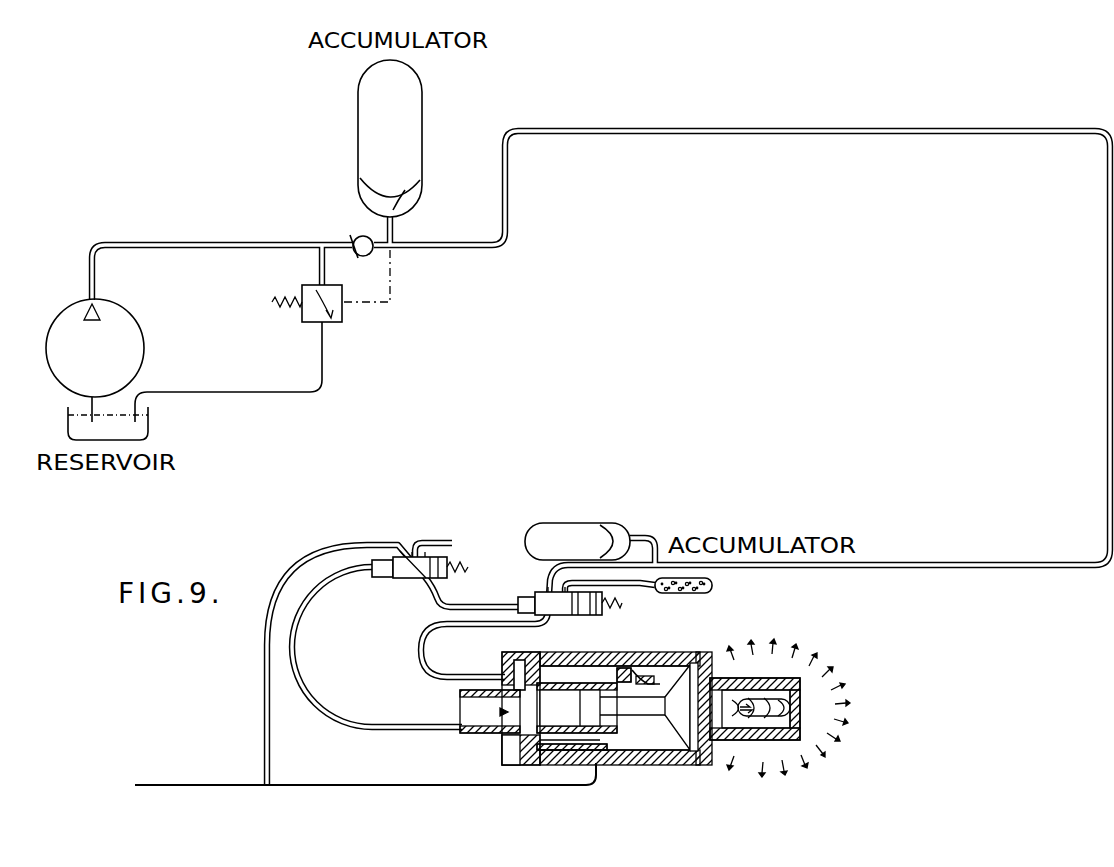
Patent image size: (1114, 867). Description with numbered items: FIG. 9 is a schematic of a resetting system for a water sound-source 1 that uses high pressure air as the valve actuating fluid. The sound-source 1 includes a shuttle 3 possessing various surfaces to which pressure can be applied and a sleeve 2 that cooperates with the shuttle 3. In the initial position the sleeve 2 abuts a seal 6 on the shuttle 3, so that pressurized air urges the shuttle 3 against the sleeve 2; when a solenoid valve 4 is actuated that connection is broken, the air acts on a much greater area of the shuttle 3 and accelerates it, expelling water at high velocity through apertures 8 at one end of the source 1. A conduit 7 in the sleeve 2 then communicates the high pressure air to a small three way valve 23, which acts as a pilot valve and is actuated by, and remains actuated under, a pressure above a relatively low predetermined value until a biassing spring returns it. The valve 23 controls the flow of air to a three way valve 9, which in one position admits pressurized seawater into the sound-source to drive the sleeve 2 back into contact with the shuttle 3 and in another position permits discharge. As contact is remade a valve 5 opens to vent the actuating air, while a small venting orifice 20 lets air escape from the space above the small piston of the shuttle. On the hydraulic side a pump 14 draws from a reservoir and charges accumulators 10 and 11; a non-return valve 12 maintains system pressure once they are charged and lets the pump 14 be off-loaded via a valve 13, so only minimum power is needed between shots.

The water sound-source 1 is at (681, 659).
The sleeve 2 is at (546, 665).
The shuttle 3 is at (703, 748).
The solenoid valve 4 is at (502, 712).
The valve 5 is at (629, 667).
The seal 6 is at (651, 682).
The conduit 7 is at (600, 755).
The apertures 8 is at (800, 688).
The three way valve 9 is at (540, 600).
The accumulator 10 is at (618, 527).
The accumulator 11 is at (420, 172).
The non-return valve 12 is at (353, 239).
The valve 13 is at (342, 321).
The pump 14 is at (70, 318).
The venting orifice 20 is at (505, 666).
The three way valve 23 is at (428, 583).